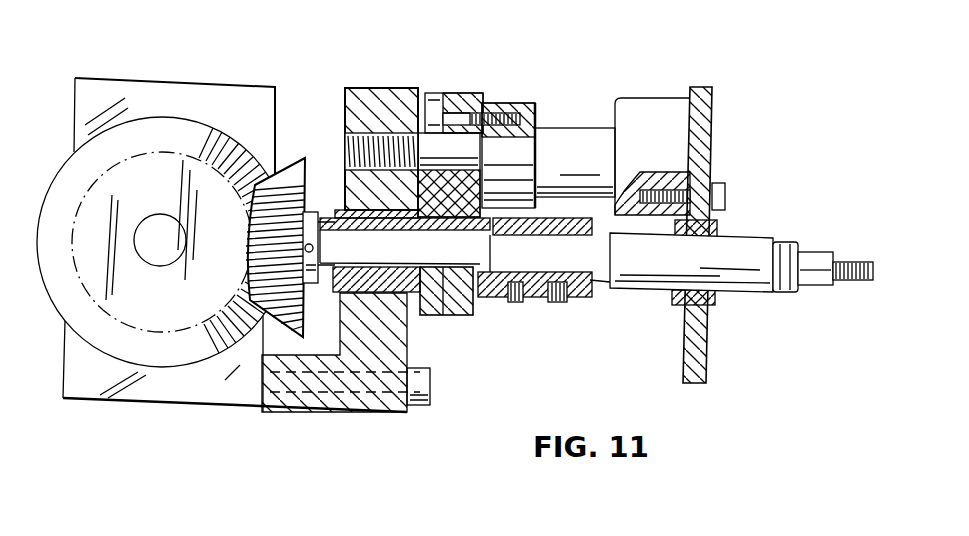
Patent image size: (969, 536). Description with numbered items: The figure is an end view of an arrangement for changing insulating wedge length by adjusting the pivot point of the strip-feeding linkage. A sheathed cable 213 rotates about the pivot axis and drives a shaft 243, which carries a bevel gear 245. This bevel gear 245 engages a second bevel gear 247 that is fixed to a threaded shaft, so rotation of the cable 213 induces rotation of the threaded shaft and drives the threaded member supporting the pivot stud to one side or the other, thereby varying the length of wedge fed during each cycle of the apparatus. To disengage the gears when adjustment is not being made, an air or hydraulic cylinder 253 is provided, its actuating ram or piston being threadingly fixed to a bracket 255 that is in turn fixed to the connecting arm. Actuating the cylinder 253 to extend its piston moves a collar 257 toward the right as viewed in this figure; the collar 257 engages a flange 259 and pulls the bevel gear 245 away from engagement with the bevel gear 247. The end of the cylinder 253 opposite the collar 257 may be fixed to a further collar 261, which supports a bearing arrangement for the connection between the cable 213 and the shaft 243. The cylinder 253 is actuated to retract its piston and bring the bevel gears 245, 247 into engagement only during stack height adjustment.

The second bevel gear 247 is at (160, 132).
The bevel gear 245 is at (290, 165).
The bracket 255 is at (385, 90).
The collar 257 is at (453, 93).
The air or hydraulic cylinder 253 is at (560, 128).
The further collar 261 is at (712, 113).
The sheathed cable 213 is at (853, 252).
The flange 259 is at (435, 297).
The shaft 243 is at (470, 297).